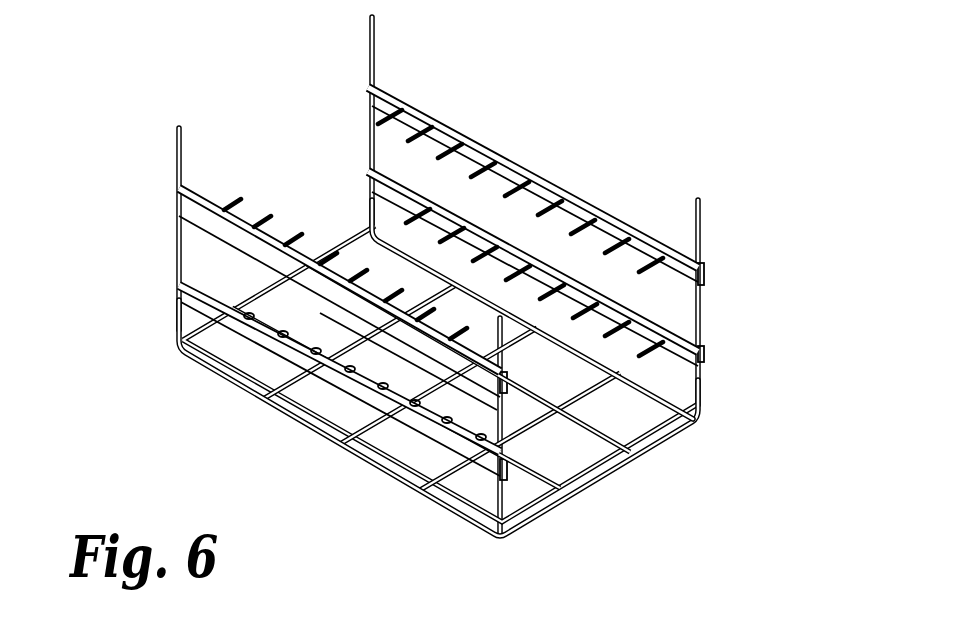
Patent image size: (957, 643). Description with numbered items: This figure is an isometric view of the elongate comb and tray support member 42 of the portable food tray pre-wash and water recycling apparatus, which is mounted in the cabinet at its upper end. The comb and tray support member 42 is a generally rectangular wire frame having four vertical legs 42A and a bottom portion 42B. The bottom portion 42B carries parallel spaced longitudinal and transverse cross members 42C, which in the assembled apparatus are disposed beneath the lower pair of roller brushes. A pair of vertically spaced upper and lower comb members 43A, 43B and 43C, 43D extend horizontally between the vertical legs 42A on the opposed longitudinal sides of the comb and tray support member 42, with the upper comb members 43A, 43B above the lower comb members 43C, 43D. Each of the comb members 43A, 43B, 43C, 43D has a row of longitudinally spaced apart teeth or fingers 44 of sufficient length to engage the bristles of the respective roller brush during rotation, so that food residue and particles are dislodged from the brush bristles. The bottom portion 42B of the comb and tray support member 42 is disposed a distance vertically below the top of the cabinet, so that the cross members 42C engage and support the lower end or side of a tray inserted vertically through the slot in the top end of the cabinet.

The comb and tray support member 42 is at (431, 288).
The vertical legs 42A is at (378, 62).
The bottom portion 42B is at (315, 435).
The cross members 42C is at (588, 472).
The upper comb member 43A is at (197, 200).
The upper comb member 43B is at (490, 170).
The lower comb member 43C is at (225, 340).
The lower comb member 43D is at (695, 380).
The teeth or fingers 44 is at (244, 198).